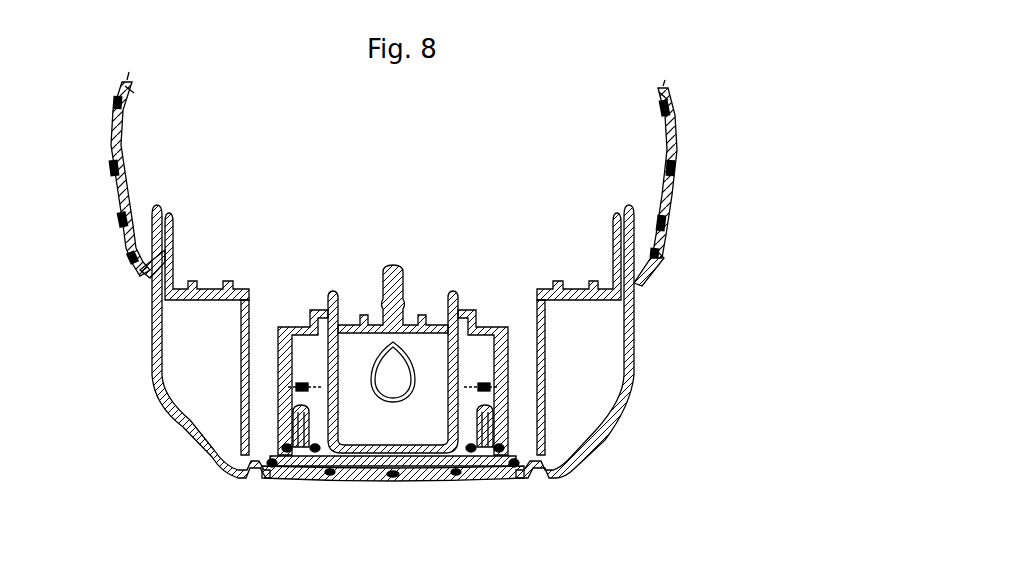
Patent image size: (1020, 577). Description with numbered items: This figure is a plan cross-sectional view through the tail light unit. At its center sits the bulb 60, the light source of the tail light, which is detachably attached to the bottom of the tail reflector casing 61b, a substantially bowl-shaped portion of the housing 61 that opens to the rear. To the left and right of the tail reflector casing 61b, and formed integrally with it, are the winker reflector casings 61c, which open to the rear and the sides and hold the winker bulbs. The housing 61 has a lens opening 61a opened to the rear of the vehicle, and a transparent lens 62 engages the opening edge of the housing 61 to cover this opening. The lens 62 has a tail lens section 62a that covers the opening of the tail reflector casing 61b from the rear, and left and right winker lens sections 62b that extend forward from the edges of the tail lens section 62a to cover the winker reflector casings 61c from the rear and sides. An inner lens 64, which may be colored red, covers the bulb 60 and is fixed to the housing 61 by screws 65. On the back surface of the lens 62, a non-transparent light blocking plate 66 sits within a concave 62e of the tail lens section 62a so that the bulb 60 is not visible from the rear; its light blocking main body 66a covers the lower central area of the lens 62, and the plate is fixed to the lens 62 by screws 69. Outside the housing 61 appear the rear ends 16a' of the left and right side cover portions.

The rear ends of side cover portions 16a' is at (392, 174).
The bulb 60 is at (410, 399).
The housing 61 is at (575, 283).
The lens opening 61a is at (648, 258).
The tail reflector casing 61b is at (473, 313).
The winker reflector casings 61c is at (249, 313).
The lens 62 is at (593, 457).
The tail lens section 62a is at (373, 478).
The winker lens sections 62b is at (634, 367).
The concave 62e is at (500, 470).
The inner lens 64 is at (337, 367).
The screws 65 is at (312, 388).
The light blocking plate 66 is at (341, 478).
The light blocking main body 66a is at (433, 478).
The screws 69 is at (300, 455).